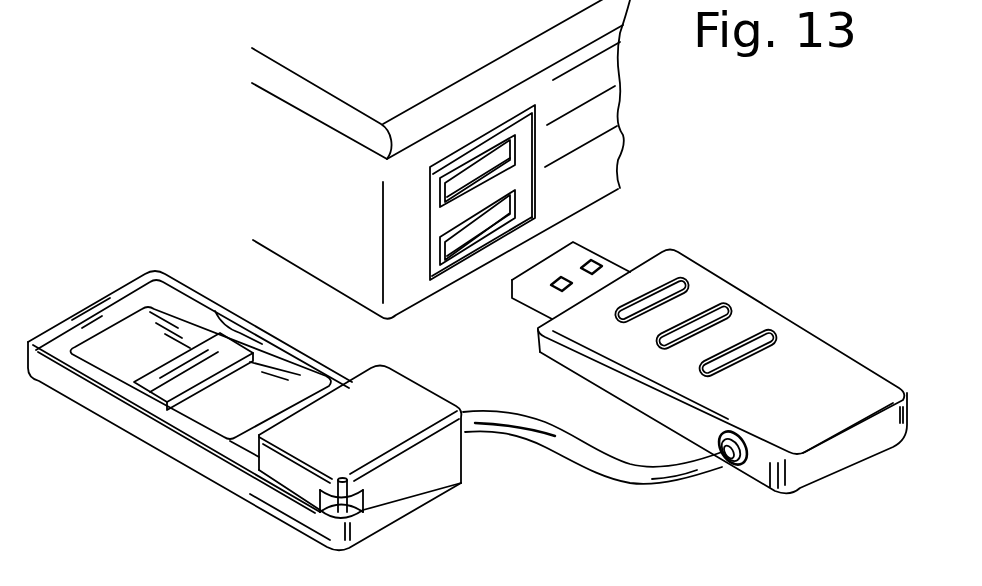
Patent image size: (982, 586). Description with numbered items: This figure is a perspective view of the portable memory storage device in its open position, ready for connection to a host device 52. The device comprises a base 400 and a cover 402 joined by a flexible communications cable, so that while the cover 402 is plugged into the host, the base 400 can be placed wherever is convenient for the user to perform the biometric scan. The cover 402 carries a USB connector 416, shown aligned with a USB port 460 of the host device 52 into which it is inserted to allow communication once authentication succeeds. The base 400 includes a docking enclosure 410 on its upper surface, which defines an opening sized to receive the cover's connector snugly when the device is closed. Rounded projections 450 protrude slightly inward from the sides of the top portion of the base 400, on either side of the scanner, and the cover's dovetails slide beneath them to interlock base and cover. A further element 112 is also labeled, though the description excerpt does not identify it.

The host device 52 is at (470, 32).
The USB port 460 is at (530, 259).
The USB connector 416 is at (578, 254).
The cover 402 is at (820, 358).
The base 400 is at (371, 524).
The docking enclosure 410 is at (290, 483).
The rounded projections 450 is at (233, 323).
The retaining bar 112 is at (163, 388).